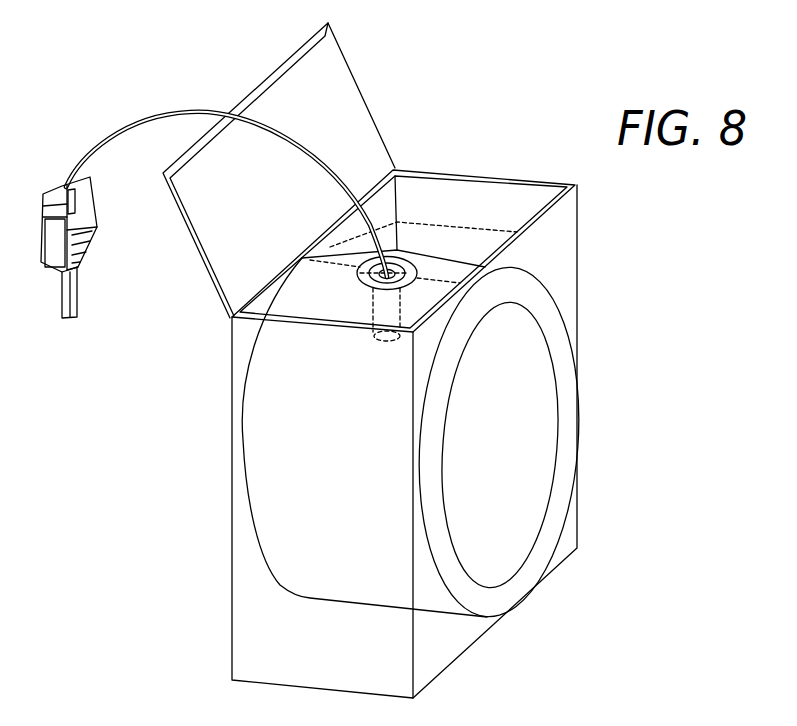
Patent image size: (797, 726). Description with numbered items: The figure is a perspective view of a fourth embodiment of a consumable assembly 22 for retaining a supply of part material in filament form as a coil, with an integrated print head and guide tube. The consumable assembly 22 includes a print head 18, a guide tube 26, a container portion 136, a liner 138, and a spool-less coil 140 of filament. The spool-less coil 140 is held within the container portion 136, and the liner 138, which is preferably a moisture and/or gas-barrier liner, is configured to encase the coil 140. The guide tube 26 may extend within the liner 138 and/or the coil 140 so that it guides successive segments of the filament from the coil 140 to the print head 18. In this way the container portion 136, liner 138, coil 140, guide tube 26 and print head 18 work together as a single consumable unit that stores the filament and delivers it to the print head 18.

The print head 18 is at (78, 242).
The consumable assembly 22 is at (730, 336).
The guide tube 26 is at (214, 124).
The container portion 136 is at (232, 533).
The liner 138 is at (447, 223).
The spool-less coil 140 is at (560, 377).